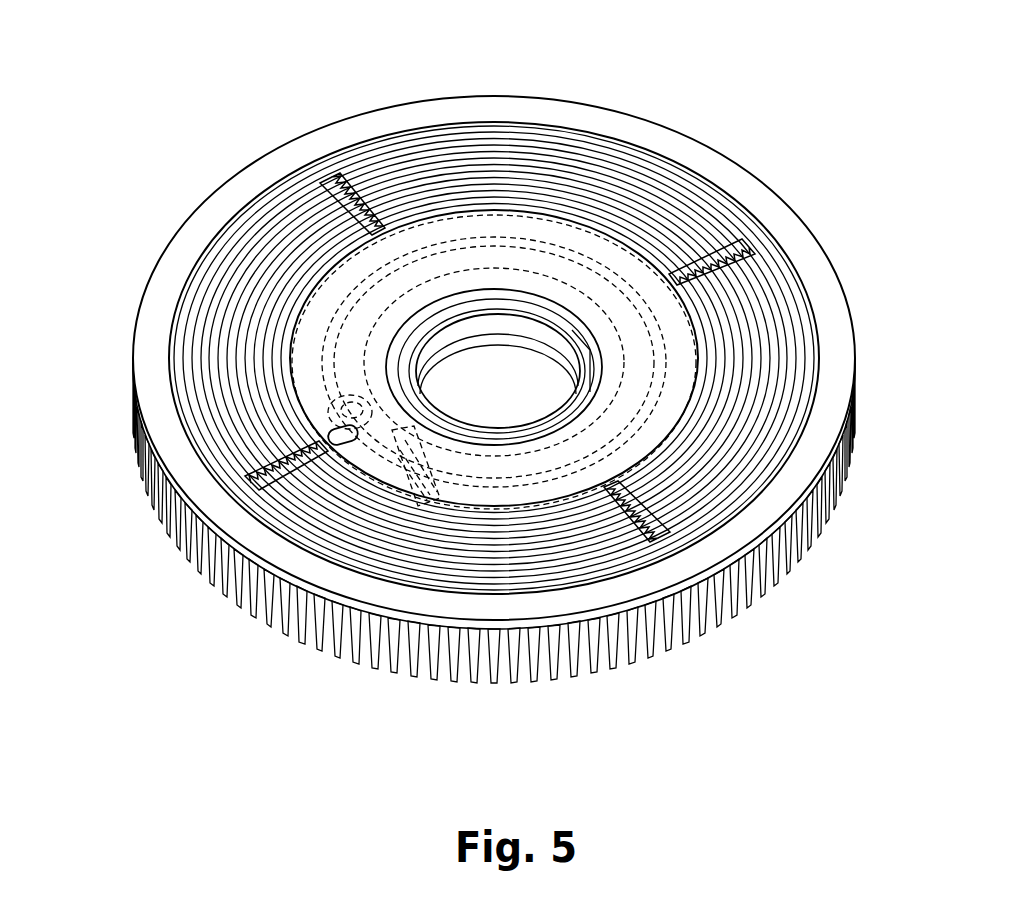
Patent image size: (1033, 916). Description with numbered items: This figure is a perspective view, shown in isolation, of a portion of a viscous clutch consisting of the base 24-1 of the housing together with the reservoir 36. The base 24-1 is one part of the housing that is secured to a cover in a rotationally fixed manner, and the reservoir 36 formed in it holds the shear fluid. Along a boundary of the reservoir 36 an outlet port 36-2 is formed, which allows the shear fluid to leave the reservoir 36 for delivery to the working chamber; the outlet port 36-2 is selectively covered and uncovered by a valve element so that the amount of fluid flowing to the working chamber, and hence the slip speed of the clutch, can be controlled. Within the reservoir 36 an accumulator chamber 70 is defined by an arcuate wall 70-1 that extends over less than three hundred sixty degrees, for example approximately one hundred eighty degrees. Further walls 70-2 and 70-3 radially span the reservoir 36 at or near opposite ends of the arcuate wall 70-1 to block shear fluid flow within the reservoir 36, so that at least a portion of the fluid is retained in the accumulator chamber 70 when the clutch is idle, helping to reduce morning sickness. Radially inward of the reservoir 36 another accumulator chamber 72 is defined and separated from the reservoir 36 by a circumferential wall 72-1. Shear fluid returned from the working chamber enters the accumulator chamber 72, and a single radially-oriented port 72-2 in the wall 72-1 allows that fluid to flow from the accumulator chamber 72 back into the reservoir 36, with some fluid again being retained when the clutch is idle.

The base 24-1 is at (622, 122).
The accumulator chamber 70 is at (398, 290).
The arcuate wall 70-1 is at (446, 268).
The wall 70-2 is at (412, 475).
The wall 70-3 is at (340, 392).
The accumulator chamber 72 is at (393, 373).
The wall 72-1 is at (522, 487).
The radially-oriented port 72-2 is at (383, 495).
The reservoir 36 is at (305, 458).
The outlet port 36-2 is at (337, 442).